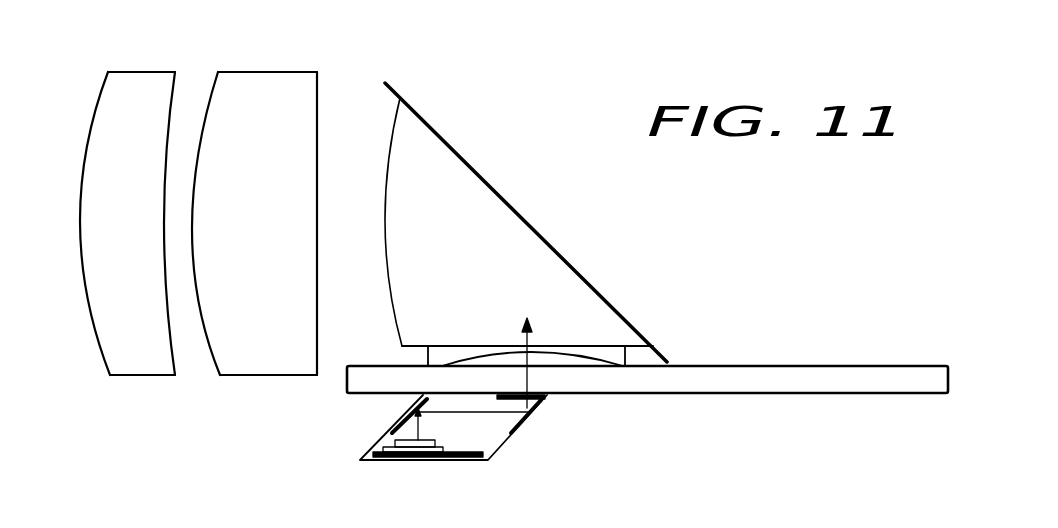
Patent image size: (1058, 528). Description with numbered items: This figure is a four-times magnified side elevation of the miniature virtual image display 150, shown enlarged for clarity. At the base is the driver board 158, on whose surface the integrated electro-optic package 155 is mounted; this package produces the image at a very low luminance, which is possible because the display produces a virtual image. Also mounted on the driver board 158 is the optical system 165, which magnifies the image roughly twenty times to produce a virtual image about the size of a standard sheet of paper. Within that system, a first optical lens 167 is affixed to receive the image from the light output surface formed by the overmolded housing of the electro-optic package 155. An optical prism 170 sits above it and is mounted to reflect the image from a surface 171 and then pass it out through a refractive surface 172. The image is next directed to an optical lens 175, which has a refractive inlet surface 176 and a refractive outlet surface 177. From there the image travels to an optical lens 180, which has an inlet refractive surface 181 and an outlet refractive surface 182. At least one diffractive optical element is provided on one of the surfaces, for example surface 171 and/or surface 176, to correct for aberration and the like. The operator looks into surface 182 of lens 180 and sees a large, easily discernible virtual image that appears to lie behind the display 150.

The miniature virtual image display 150 is at (791, 192).
The integrated electro-optic package 155 is at (370, 428).
The driver board 158 is at (867, 363).
The optical system 165 is at (511, 72).
The first optical lens 167 is at (427, 357).
The optical prism 170 is at (502, 201).
The reflecting surface of prism 171 is at (560, 256).
The refractive surface of prism 172 is at (389, 157).
The optical lens 175 is at (279, 204).
The refractive inlet surface 176 is at (318, 89).
The refractive outlet surface 177 is at (214, 88).
The optical lens 180 is at (140, 243).
The inlet refractive surface 181 is at (176, 358).
The outlet refractive surface 182 is at (102, 360).